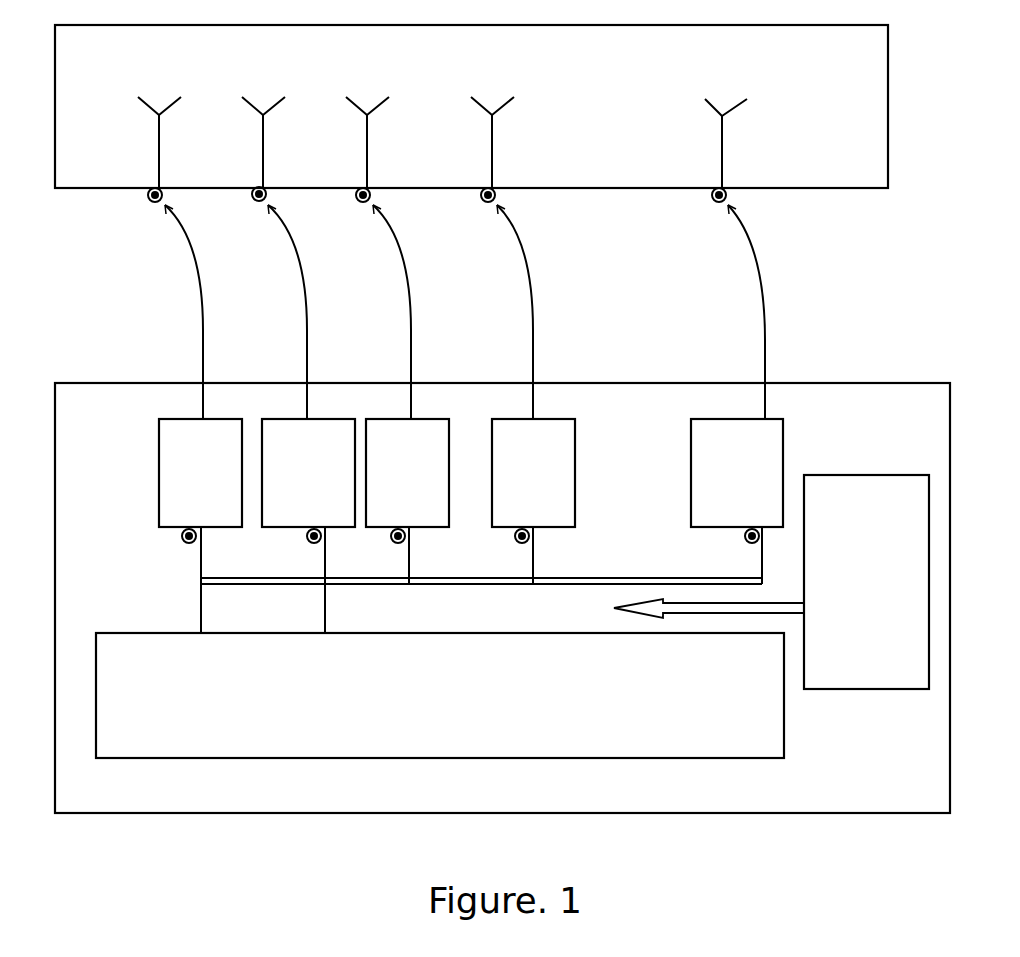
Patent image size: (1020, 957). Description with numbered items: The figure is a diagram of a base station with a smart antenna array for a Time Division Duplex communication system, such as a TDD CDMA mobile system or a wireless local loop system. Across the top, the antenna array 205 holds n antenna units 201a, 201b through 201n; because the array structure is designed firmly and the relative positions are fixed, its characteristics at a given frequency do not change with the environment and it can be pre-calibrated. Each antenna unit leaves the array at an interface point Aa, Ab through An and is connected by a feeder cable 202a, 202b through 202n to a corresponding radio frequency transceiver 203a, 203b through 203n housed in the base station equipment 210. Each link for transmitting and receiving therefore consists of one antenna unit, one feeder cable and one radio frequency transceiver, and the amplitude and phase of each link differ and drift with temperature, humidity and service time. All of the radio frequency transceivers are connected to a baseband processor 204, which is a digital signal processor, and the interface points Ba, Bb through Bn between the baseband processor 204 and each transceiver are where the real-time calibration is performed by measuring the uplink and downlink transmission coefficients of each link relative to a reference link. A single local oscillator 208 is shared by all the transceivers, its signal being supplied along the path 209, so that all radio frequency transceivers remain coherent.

The antenna unit 201a is at (161, 123).
The antenna unit 201b is at (263, 123).
The antenna unit 201n is at (722, 123).
The feeder cable 202a is at (168, 312).
The feeder cable 202b is at (272, 312).
The feeder cable 202n is at (719, 312).
The radio frequency transceiver 203a is at (200, 473).
The radio frequency transceiver 203b is at (308, 473).
The radio frequency transceiver 203n is at (737, 473).
The baseband processor 204 is at (440, 695).
The antenna array 205 is at (471, 106).
The local oscillator 208 is at (866, 582).
The control signal arrow 209 is at (624, 609).
The base station / receiver unit 210 is at (502, 598).
The interface point A Aa is at (138, 208).
The interface point A Ab is at (253, 208).
The interface point A An is at (701, 208).
The interface point B Ba is at (176, 548).
The interface point B Bb is at (300, 548).
The interface point B Bn is at (728, 548).